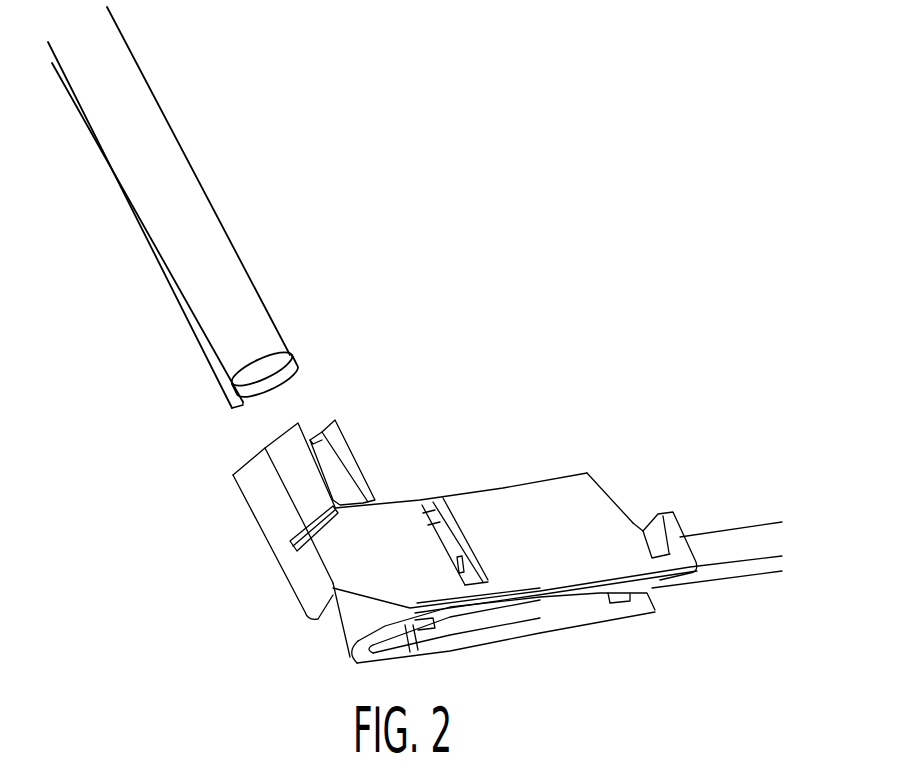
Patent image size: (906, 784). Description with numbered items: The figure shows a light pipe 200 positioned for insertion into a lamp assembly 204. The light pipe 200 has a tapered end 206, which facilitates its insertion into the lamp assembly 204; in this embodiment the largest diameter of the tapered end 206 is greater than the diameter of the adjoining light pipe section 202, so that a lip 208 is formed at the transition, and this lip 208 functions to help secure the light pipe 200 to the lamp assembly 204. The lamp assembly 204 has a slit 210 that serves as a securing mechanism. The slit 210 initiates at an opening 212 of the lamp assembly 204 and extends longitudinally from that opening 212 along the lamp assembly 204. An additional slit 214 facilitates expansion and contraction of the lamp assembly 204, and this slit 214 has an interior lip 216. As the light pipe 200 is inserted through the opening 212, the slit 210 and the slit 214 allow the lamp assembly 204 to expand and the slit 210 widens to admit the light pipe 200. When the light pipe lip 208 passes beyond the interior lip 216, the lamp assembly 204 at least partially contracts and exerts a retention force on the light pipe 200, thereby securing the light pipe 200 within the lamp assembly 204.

The light pipe 200 is at (220, 183).
The light pipe section 202 is at (188, 283).
The lamp assembly 204 is at (462, 468).
The tapered end 206 is at (287, 363).
The lip 208 is at (290, 355).
The slit 210 is at (358, 470).
The opening 212 is at (313, 440).
The slit 214 is at (321, 526).
The interior lip 216 is at (297, 535).